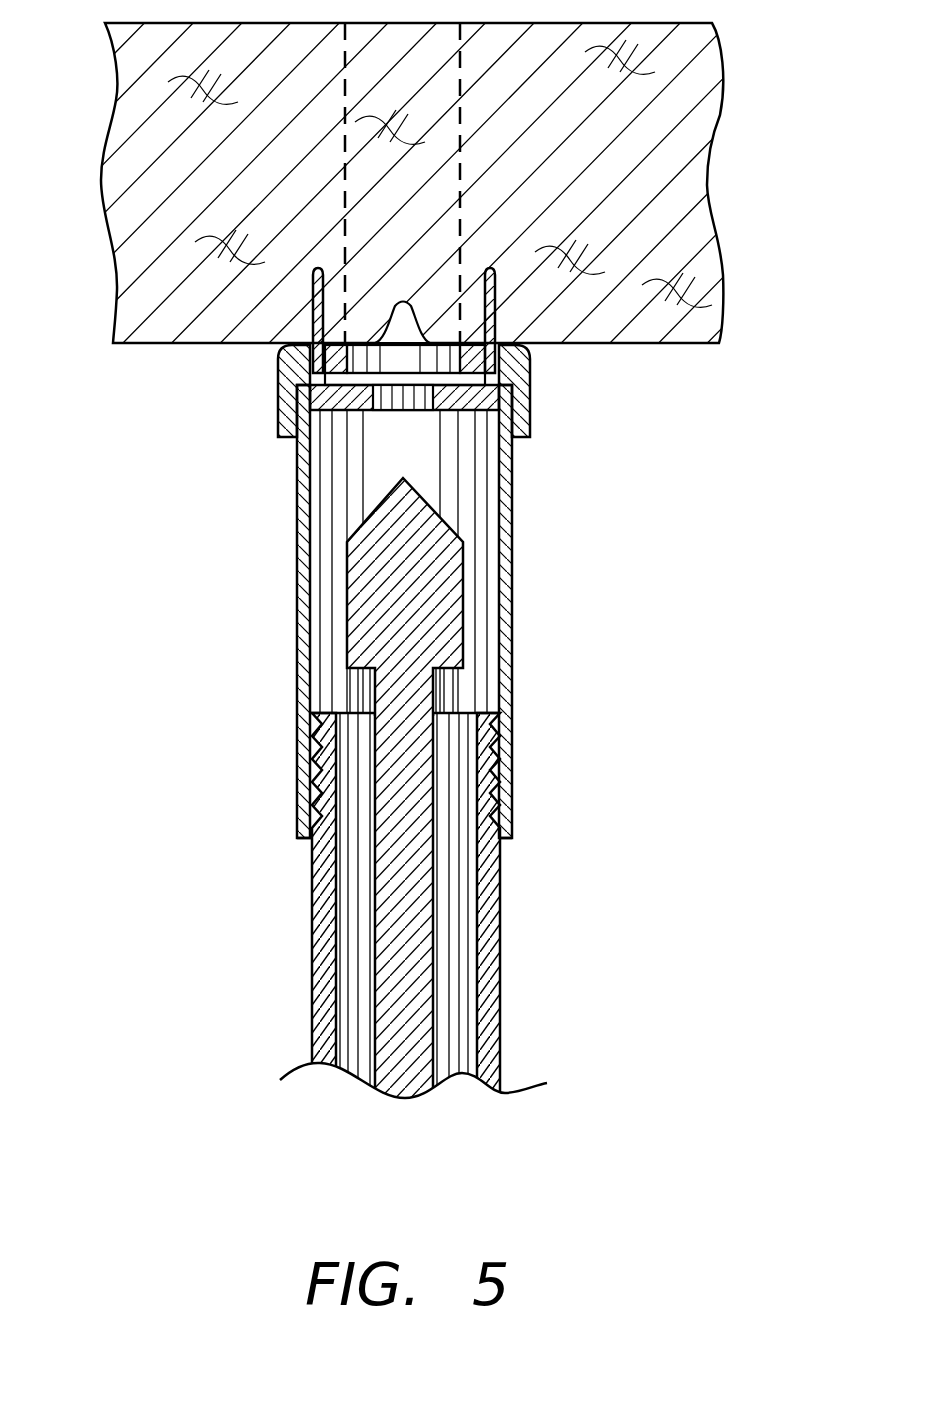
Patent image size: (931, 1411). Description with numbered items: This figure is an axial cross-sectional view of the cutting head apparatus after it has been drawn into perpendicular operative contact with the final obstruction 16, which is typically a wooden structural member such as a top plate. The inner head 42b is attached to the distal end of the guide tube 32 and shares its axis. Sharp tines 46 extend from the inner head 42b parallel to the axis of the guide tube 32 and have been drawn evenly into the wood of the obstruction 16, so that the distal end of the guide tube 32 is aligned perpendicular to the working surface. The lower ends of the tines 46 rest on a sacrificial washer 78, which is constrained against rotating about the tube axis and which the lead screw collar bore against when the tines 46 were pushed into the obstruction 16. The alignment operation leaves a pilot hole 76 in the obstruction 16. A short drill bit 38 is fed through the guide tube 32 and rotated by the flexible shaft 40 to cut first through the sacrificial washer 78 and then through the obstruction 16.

The final obstruction 16 is at (658, 225).
The pilot hole 76 is at (403, 303).
The tines 46 is at (312, 342).
The sacrificial washer 78 is at (477, 410).
The drill bit 38 is at (360, 612).
The inner head 42b is at (570, 656).
The guide tube 32 is at (500, 975).
The flexible shaft 40 is at (408, 1058).